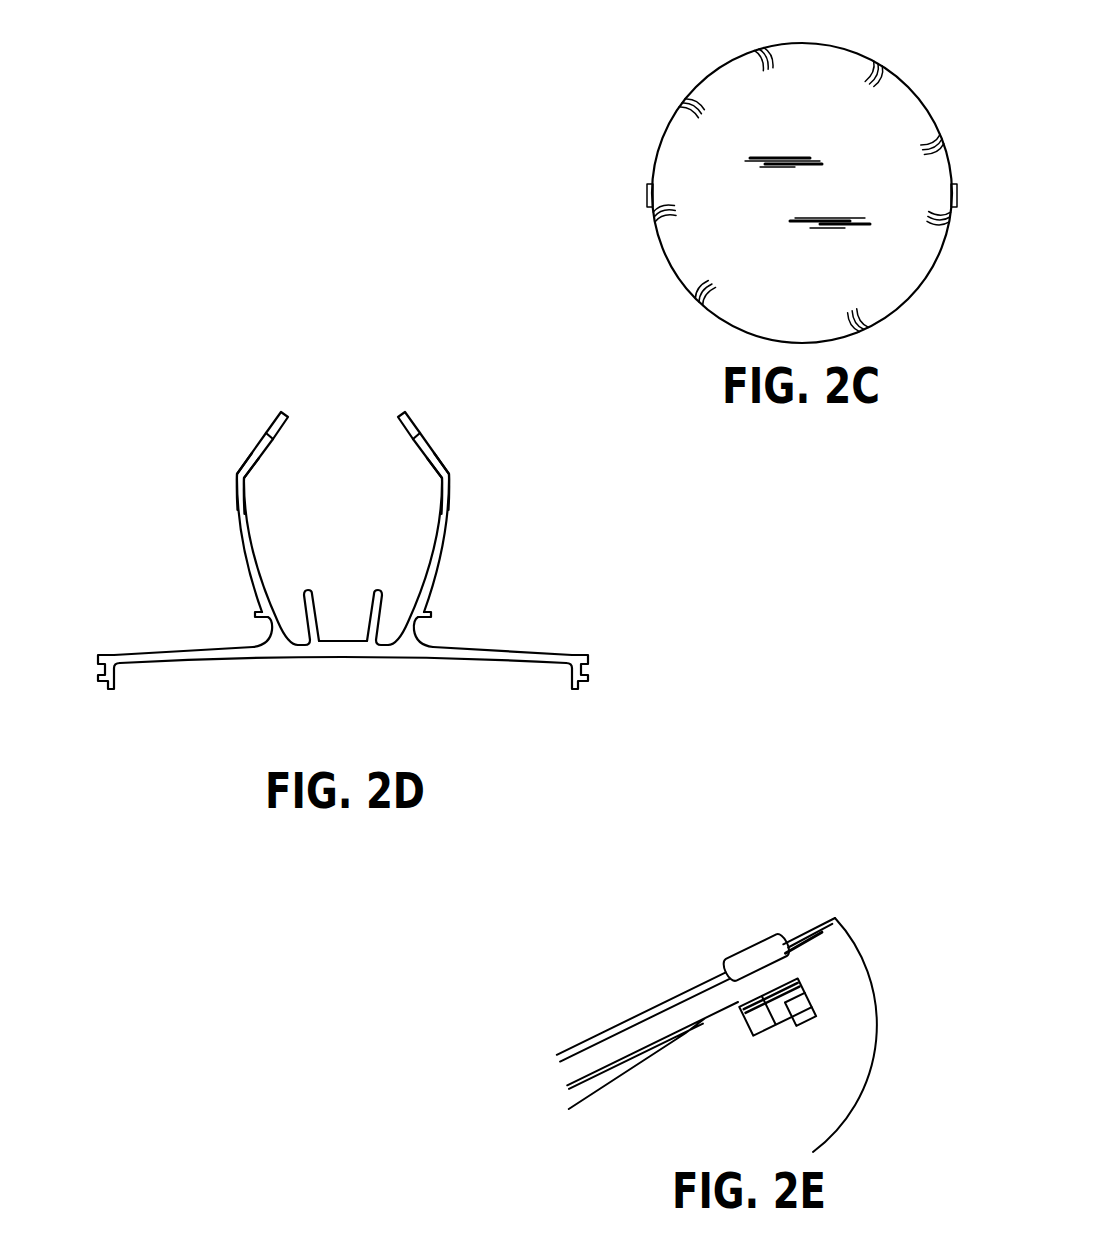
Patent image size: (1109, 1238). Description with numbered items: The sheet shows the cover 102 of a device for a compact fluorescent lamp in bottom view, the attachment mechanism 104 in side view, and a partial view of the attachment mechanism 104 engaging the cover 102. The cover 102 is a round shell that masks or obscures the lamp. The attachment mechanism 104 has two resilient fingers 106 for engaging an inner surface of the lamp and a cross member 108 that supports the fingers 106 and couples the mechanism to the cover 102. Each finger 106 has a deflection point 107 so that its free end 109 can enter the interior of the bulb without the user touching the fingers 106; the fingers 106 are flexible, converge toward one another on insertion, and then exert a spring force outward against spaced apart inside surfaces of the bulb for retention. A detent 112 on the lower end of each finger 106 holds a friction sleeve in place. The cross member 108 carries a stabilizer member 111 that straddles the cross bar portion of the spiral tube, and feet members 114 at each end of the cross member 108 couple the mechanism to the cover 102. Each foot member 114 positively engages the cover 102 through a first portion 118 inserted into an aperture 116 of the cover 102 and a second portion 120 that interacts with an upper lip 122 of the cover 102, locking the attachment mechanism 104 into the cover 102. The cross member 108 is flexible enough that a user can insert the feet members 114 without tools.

In FIG. 2C, the cover 102 is at (661, 143).
In FIG. 2E, the cover 102 is at (833, 1098).
In FIG. 2D, the attachment mechanism 104 is at (154, 476).
In FIG. 2D, the resilient fingers 106 is at (266, 433).
In FIG. 2D, the deflection point 107 is at (237, 487).
In FIG. 2D, the cross member 108 is at (465, 649).
In FIG. 2D, the free ends 109 is at (285, 411).
In FIG. 2D, the stabilizer member 111 is at (341, 560).
In FIG. 2D, the detent 112 is at (253, 620).
In FIG. 2D, the feet members 114 is at (116, 675).
In FIG. 2E, the aperture 116 is at (757, 1037).
In FIG. 2E, the first portion 118 is at (803, 996).
In FIG. 2E, the second portion 120 is at (760, 943).
In FIG. 2E, the upper lip 122 is at (811, 916).